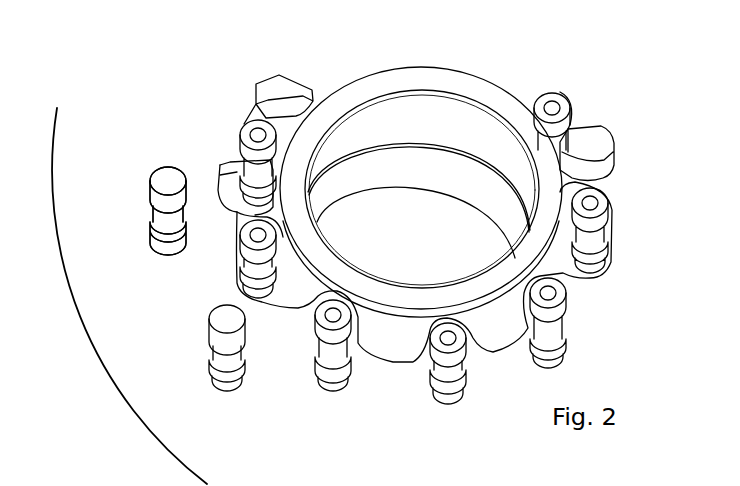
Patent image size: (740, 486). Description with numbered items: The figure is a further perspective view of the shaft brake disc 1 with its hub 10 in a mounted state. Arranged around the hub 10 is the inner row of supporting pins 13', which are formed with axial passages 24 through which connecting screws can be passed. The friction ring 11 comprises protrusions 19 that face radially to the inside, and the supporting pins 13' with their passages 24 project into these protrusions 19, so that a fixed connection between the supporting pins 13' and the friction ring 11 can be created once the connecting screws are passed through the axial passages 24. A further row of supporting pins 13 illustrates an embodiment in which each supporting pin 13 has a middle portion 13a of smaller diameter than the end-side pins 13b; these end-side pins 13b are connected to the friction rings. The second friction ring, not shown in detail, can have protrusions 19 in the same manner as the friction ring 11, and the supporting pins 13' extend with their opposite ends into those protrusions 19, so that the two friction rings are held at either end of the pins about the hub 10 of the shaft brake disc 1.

The shaft brake disc 1 is at (590, 88).
The hub 10 is at (470, 92).
The friction ring 11 is at (123, 404).
The supporting pins 13 is at (158, 303).
The middle portion 13a is at (152, 215).
The end-side pins 13b is at (150, 183).
The supporting pins 13' is at (390, 398).
The protrusions 19 is at (350, 297).
The axial passages 24 is at (320, 323).